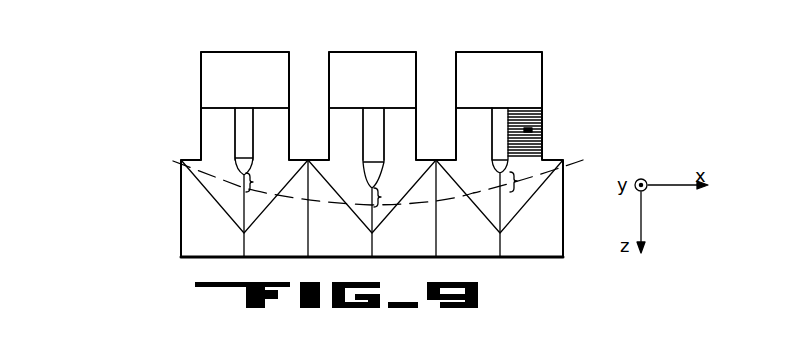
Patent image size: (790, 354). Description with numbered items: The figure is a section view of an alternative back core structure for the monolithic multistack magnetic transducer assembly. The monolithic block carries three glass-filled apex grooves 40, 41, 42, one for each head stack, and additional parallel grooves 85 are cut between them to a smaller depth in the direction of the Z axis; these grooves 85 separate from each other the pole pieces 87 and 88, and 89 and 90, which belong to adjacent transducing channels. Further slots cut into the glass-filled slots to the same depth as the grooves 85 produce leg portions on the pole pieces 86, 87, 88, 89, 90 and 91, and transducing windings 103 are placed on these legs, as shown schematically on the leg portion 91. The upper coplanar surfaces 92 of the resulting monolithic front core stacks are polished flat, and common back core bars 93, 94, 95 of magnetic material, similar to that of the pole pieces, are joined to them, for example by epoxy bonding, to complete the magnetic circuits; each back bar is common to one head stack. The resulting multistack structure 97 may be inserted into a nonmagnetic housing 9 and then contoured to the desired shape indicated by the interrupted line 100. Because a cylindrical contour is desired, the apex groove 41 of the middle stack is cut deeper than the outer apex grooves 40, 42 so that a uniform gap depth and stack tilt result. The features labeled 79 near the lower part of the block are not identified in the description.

The nonmagnetic housing 9 is at (388, 189).
The apex groove 40 is at (245, 115).
The apex groove 41 is at (375, 118).
The apex groove 42 is at (500, 112).
The inclined surface 79 is at (222, 208).
The parallel grooves 85 is at (320, 155).
The pole piece 86 is at (227, 133).
The pole piece 87 is at (280, 133).
The pole piece 88 is at (354, 133).
The pole piece 89 is at (409, 133).
The pole piece 90 is at (485, 133).
The leg portion 91 is at (543, 121).
The upper coplanar surfaces 92 is at (216, 107).
The common back core bar 93 is at (256, 52).
The common back core bar 94 is at (377, 57).
The common back core bar 95 is at (517, 57).
The multistack structure 97 is at (148, 141).
The interrupted line 100 is at (173, 161).
The transducing windings 103 is at (545, 131).